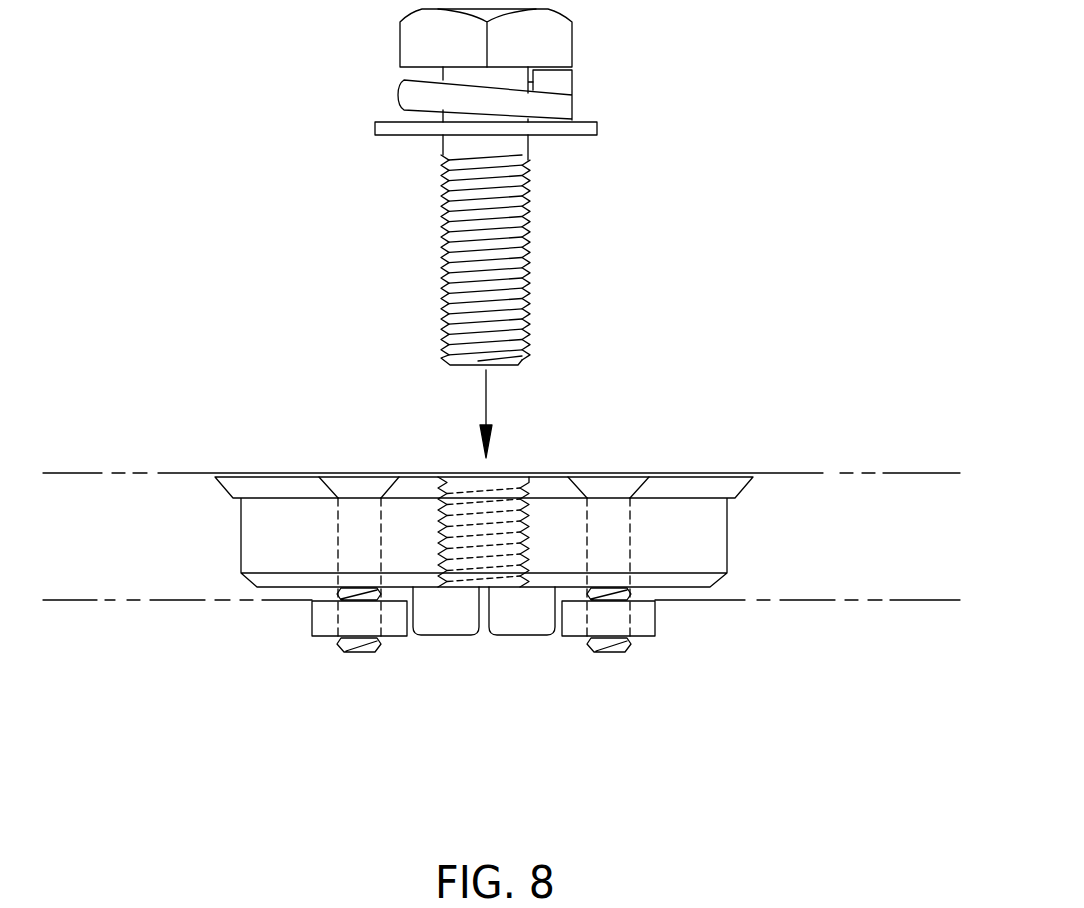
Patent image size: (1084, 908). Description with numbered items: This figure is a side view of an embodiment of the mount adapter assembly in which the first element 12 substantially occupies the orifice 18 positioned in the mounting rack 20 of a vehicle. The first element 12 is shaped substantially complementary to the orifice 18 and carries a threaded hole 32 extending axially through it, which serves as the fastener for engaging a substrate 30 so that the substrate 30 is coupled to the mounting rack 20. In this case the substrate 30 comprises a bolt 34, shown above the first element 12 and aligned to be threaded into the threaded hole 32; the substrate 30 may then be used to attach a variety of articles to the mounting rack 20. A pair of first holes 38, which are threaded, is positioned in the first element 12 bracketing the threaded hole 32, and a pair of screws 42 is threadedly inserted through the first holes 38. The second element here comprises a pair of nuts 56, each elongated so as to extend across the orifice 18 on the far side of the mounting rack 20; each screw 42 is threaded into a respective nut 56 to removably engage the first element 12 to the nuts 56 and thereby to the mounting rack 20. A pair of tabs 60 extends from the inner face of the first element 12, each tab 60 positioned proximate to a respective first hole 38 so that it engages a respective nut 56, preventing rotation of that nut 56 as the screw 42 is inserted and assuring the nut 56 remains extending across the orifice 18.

The first element 12 is at (688, 532).
The orifice 18 is at (292, 525).
The mounting rack 20 is at (827, 508).
The substrate 30 is at (462, 162).
The threaded hole 32 is at (498, 505).
The bolt 34 is at (503, 223).
The first holes 38 is at (363, 533).
The screws 42 is at (493, 542).
The nuts 56 is at (392, 630).
The tabs 60 is at (447, 625).